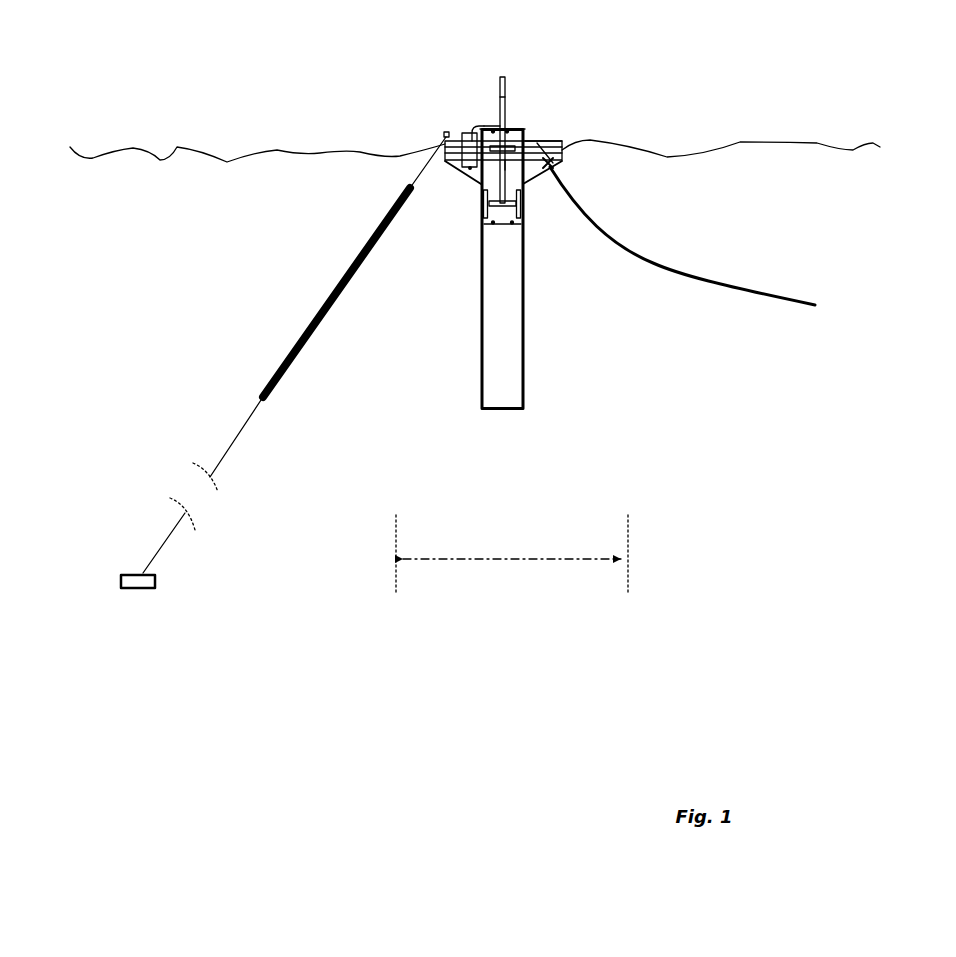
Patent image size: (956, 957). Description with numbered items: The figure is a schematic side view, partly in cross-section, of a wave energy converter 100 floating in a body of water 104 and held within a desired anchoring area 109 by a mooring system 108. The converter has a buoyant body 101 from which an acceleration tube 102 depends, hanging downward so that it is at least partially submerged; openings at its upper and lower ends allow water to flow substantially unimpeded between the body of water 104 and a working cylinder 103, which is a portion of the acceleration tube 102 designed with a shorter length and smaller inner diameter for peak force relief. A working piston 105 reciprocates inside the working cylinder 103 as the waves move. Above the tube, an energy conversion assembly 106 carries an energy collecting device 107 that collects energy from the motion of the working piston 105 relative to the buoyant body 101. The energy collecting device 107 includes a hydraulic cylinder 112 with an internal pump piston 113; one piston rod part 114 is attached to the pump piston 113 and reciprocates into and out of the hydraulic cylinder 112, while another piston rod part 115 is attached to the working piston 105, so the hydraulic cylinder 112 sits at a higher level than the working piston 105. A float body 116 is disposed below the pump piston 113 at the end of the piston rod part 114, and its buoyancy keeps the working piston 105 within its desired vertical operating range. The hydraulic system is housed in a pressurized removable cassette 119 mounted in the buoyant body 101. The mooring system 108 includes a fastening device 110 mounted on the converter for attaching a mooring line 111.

The wave energy converter 100 is at (375, 80).
The buoyant body 101 is at (564, 132).
The acceleration tube 102 is at (541, 328).
The working cylinder 103 is at (511, 214).
The body of water 104 is at (178, 147).
The working piston 105 is at (503, 212).
The energy conversion assembly 106 is at (437, 92).
The energy collecting device 107 is at (478, 104).
The mooring system 108 is at (263, 282).
The anchoring area 109 is at (512, 562).
The fastening device 110 is at (447, 133).
The mooring line 111 is at (388, 189).
The hydraulic cylinder 112 is at (504, 72).
The pump piston 113 is at (506, 97).
The piston rod part 114 is at (526, 139).
The piston rod part 115 is at (508, 166).
The float body 116 is at (493, 152).
The removable cassette 119 is at (468, 173).